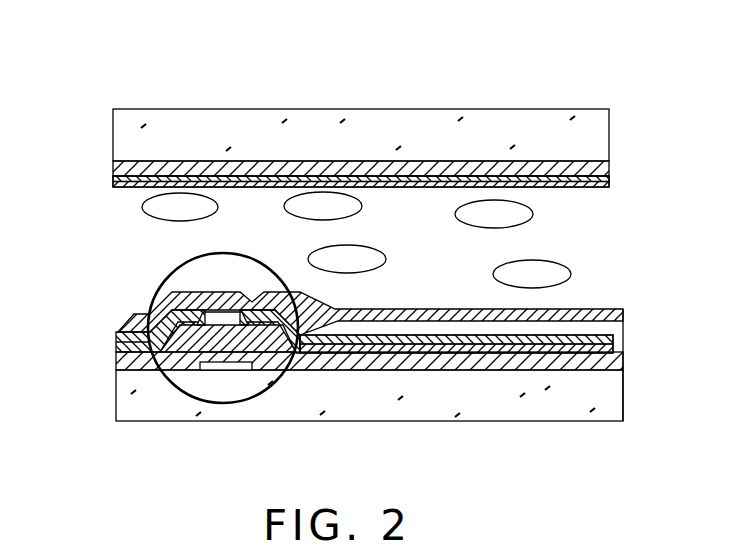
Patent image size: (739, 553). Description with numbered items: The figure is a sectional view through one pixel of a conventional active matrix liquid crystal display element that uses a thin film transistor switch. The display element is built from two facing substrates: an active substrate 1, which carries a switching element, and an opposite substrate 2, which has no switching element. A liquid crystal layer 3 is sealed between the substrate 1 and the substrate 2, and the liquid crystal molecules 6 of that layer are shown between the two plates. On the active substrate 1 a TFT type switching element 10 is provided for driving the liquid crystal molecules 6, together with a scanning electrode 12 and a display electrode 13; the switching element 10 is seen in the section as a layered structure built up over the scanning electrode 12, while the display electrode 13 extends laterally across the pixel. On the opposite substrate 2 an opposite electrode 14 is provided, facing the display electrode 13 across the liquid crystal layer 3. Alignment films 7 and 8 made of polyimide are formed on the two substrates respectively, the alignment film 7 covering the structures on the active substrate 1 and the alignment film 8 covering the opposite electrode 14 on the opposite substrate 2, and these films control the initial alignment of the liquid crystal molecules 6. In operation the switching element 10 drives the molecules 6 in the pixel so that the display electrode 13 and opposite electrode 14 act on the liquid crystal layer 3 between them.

The substrate 1 is at (302, 421).
The substrate 2 is at (329, 109).
The liquid crystal layer 3 is at (117, 327).
The liquid crystal molecules 6 is at (365, 260).
The alignment film 7 is at (118, 332).
The alignment film 8 is at (113, 184).
The TFT type switching element 10 is at (115, 351).
The scanning electrode 12 is at (212, 372).
The display electrode 13 is at (440, 351).
The opposite electrode 14 is at (113, 170).